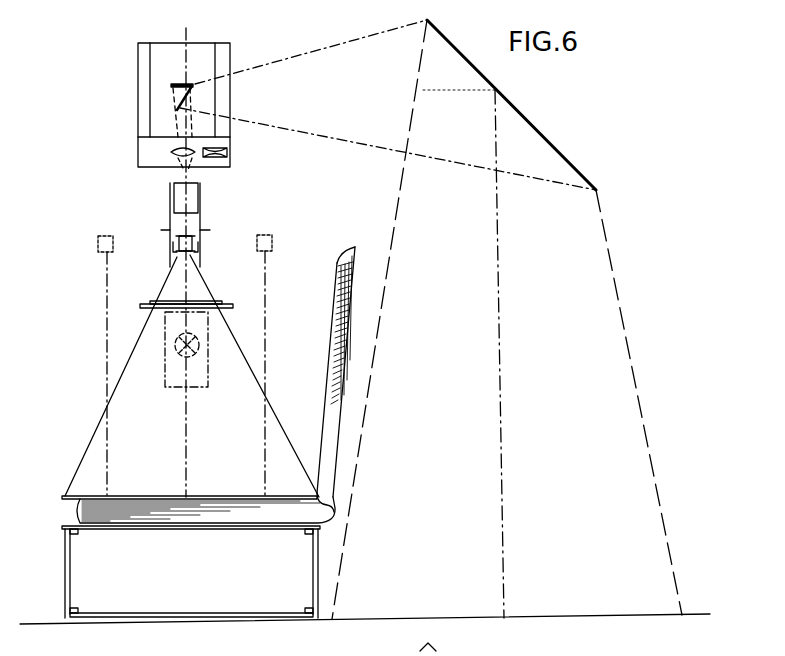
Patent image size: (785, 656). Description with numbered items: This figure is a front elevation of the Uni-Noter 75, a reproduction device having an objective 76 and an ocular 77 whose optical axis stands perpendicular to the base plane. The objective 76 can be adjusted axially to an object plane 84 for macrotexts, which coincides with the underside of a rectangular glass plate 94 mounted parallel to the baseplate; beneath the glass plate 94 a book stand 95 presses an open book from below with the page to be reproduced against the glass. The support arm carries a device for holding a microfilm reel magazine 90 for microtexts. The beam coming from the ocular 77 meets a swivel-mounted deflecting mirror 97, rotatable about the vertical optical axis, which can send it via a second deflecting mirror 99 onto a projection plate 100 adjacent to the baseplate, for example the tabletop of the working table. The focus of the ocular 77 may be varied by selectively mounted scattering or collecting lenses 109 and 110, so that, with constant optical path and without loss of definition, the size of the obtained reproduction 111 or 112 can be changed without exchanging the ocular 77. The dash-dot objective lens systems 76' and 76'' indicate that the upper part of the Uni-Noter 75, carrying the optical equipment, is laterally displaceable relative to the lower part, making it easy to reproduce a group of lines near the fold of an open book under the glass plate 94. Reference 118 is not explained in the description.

The reproduction 111 is at (230, 44).
The reproduction 112 is at (138, 110).
The deflecting mirror 97 is at (170, 88).
The collecting lens 110 is at (170, 152).
The scattering lens 109 is at (228, 152).
The lamp tube 118 is at (202, 230).
The ocular 77 is at (174, 195).
The objective 76 is at (165, 245).
The objective lens system 76' is at (86, 364).
The objective lens system 76'' is at (289, 363).
The Uni-Noter 75 is at (74, 361).
The microfilm reel magazine 90 is at (168, 380).
The glass plate 94 is at (152, 497).
The object plane 84 is at (227, 503).
The book stand 95 is at (66, 585).
The second deflecting mirror 99 is at (568, 160).
The projection plate 100 is at (568, 617).